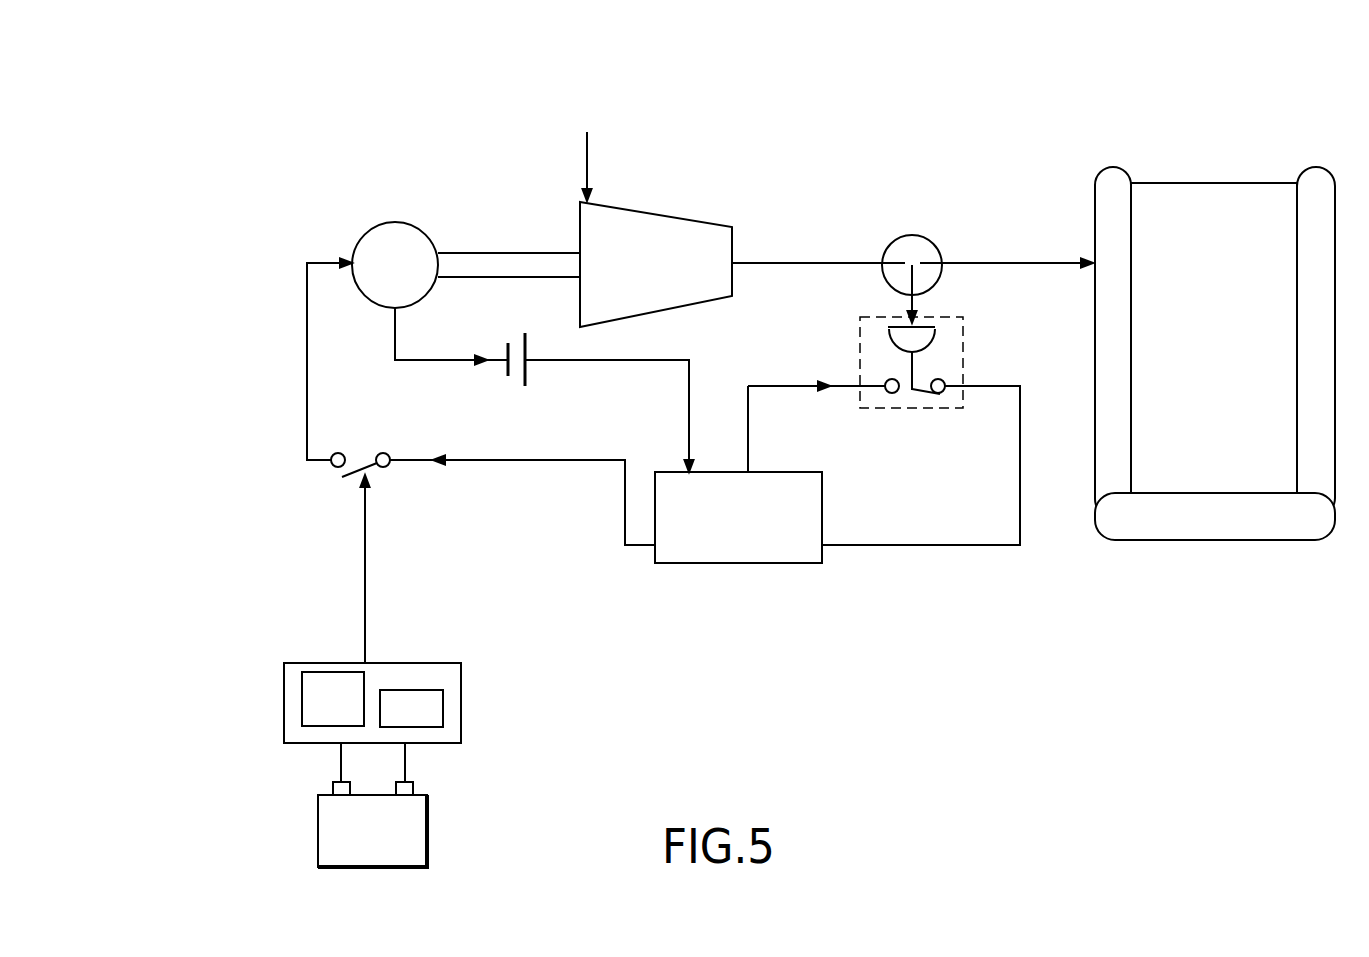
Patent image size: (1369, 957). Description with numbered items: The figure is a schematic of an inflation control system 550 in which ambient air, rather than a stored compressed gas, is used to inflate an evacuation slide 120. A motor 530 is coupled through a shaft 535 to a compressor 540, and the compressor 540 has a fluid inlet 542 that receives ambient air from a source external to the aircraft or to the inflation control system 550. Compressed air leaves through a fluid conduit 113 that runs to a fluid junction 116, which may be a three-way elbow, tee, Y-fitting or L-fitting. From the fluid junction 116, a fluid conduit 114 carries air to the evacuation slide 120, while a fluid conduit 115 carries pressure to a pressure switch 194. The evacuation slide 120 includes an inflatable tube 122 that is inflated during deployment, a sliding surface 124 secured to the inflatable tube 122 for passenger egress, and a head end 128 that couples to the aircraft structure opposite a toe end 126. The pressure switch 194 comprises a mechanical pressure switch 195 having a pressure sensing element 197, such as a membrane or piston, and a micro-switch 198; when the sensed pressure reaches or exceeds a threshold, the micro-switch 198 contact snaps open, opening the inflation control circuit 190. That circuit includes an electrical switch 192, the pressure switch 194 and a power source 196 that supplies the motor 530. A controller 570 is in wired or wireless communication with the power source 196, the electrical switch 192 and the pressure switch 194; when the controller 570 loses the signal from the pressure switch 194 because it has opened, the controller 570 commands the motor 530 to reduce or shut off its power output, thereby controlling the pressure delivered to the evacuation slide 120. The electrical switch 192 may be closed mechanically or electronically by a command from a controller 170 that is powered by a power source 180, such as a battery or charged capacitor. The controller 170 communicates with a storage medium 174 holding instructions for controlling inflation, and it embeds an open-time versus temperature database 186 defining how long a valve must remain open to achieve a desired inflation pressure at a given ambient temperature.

The inflation control system 550 is at (187, 171).
The motor 530 is at (373, 248).
The shaft 535 is at (470, 268).
The compressor 540 is at (600, 242).
The fluid inlet 542 is at (585, 198).
The fluid conduit 113 is at (793, 255).
The fluid conduit 114 is at (1003, 258).
The fluid junction 116 is at (917, 265).
The fluid conduit 115 is at (915, 295).
The pressure switch 194 is at (905, 410).
The pressure sensing element 197 is at (927, 337).
The mechanical pressure switch 195 is at (925, 360).
The micro-switch 198 is at (928, 396).
The power source 196 is at (525, 362).
The electrical switch 192 is at (372, 467).
The inflation control circuit 190 is at (738, 575).
The controller 570 is at (738, 517).
The controller 170 is at (372, 661).
The open-time versus temperature database 186 is at (333, 699).
The storage medium 174 is at (411, 708).
The power source 180 is at (372, 805).
The evacuation slide 120 is at (1184, 327).
The head end 128 is at (1156, 183).
The inflatable tube 122 is at (1107, 295).
The toe end 126 is at (1190, 525).
The sliding surface 124 is at (1214, 338).